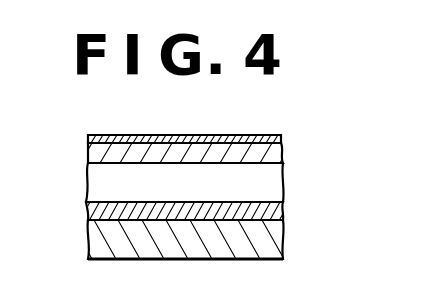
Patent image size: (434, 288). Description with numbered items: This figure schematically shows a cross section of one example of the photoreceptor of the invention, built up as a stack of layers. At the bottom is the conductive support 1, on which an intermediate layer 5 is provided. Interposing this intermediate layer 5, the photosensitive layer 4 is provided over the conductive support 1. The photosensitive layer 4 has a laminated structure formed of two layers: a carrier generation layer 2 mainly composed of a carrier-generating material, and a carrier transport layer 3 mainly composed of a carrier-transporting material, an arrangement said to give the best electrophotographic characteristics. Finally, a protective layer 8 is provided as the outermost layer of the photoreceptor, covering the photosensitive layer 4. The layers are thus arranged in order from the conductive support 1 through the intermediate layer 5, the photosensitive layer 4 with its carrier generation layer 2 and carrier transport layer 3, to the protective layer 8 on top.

The conductive support 1 is at (283, 243).
The carrier generation layer 2 is at (283, 150).
The carrier transport layer 3 is at (283, 181).
The photosensitive layer 4 is at (208, 167).
The intermediate layer 5 is at (283, 213).
The protective layer 8 is at (281, 134).